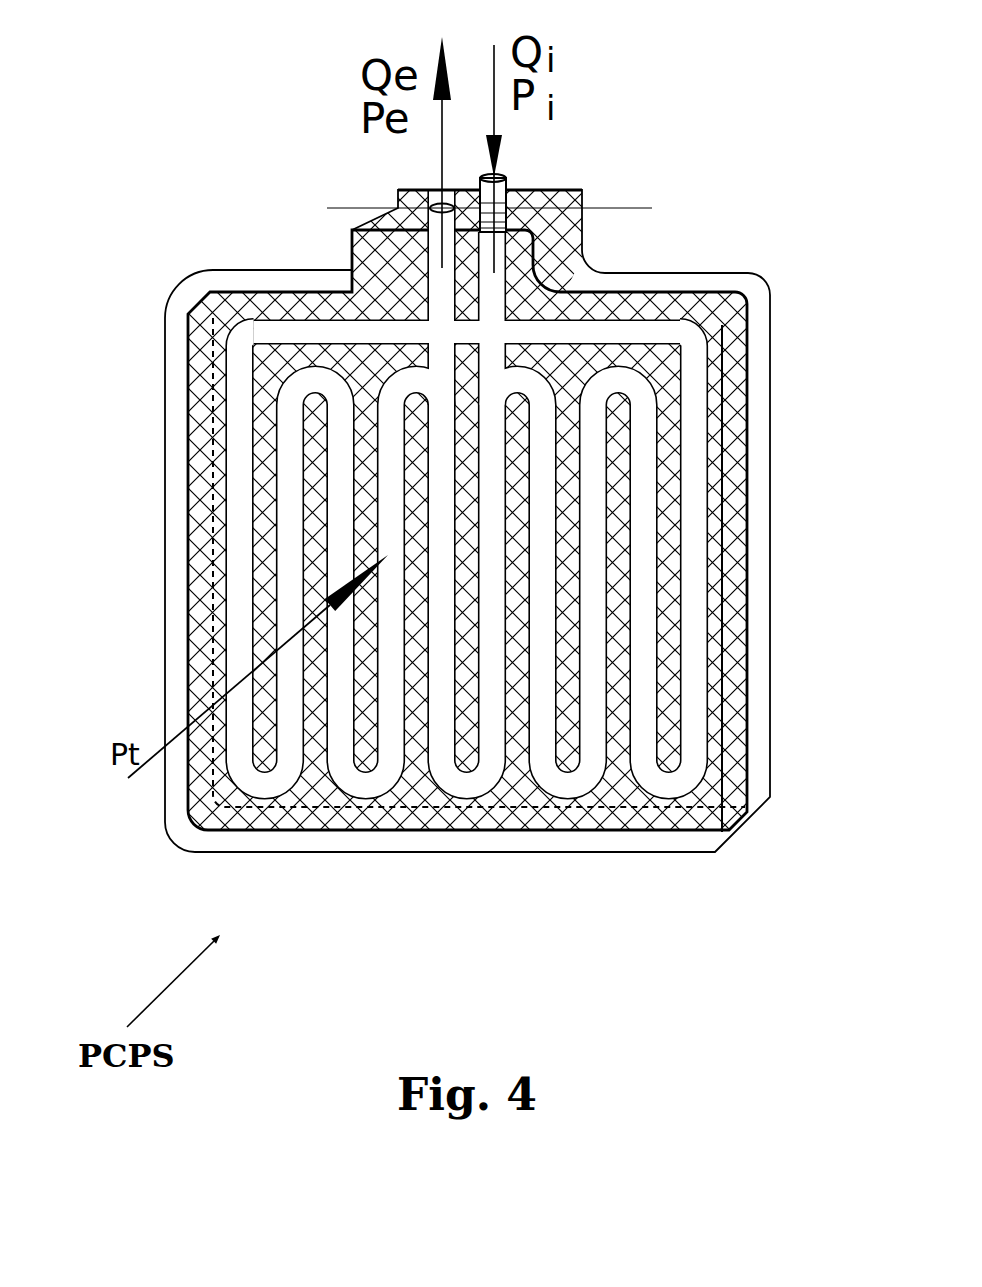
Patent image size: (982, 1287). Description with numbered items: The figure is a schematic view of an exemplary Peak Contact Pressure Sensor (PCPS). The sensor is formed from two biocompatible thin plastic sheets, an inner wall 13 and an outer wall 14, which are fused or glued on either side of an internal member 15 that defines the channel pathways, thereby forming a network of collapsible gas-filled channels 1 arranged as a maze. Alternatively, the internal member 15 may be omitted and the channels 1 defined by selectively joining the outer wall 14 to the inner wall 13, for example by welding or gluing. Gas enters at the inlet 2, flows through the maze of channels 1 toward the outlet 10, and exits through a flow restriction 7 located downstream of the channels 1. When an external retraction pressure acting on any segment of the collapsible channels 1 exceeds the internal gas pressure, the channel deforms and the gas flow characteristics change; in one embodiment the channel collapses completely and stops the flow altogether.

The gas-filled channels 1 is at (467, 487).
The inlet 2 is at (386, 200).
The flow restriction 7 is at (554, 169).
The outlet 10 is at (558, 200).
The inner wall 13 is at (797, 435).
The outer wall 14 is at (122, 510).
The internal member 15 is at (786, 736).